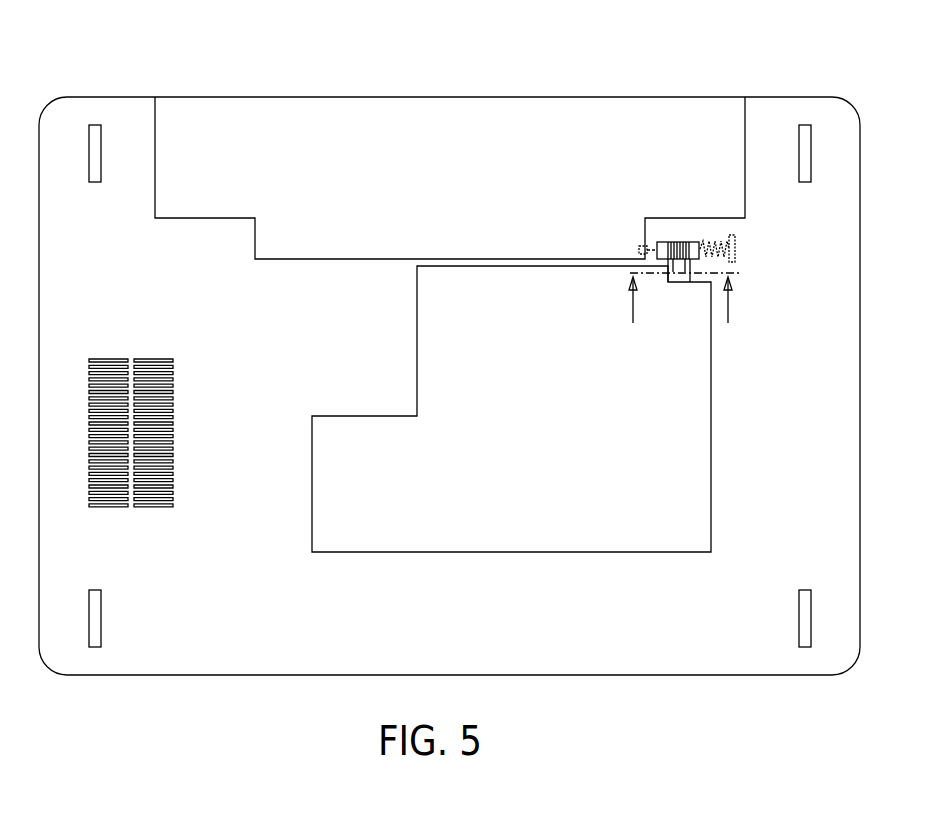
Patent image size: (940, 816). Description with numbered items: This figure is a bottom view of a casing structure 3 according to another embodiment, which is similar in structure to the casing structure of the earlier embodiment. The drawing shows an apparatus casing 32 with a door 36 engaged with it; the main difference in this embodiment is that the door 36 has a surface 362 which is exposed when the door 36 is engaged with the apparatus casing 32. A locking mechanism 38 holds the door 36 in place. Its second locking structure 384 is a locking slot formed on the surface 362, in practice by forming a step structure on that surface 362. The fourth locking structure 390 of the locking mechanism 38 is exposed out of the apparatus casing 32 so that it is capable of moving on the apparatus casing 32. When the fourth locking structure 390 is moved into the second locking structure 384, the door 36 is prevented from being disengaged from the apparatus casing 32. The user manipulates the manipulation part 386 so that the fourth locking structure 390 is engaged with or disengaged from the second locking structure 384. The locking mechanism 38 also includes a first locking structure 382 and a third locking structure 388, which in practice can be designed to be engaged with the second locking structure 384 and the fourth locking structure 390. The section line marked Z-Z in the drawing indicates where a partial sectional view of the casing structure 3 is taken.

The casing structure 3 is at (795, 68).
The apparatus casing 32 is at (815, 217).
The door 36 is at (692, 438).
The surface 362 is at (522, 332).
The locking mechanism 38 is at (692, 230).
The first locking structure 382 is at (638, 248).
The second locking structure 384 is at (661, 284).
The manipulation part 386 is at (665, 247).
The third locking structure 388 is at (645, 247).
The fourth locking structure 390 is at (682, 270).